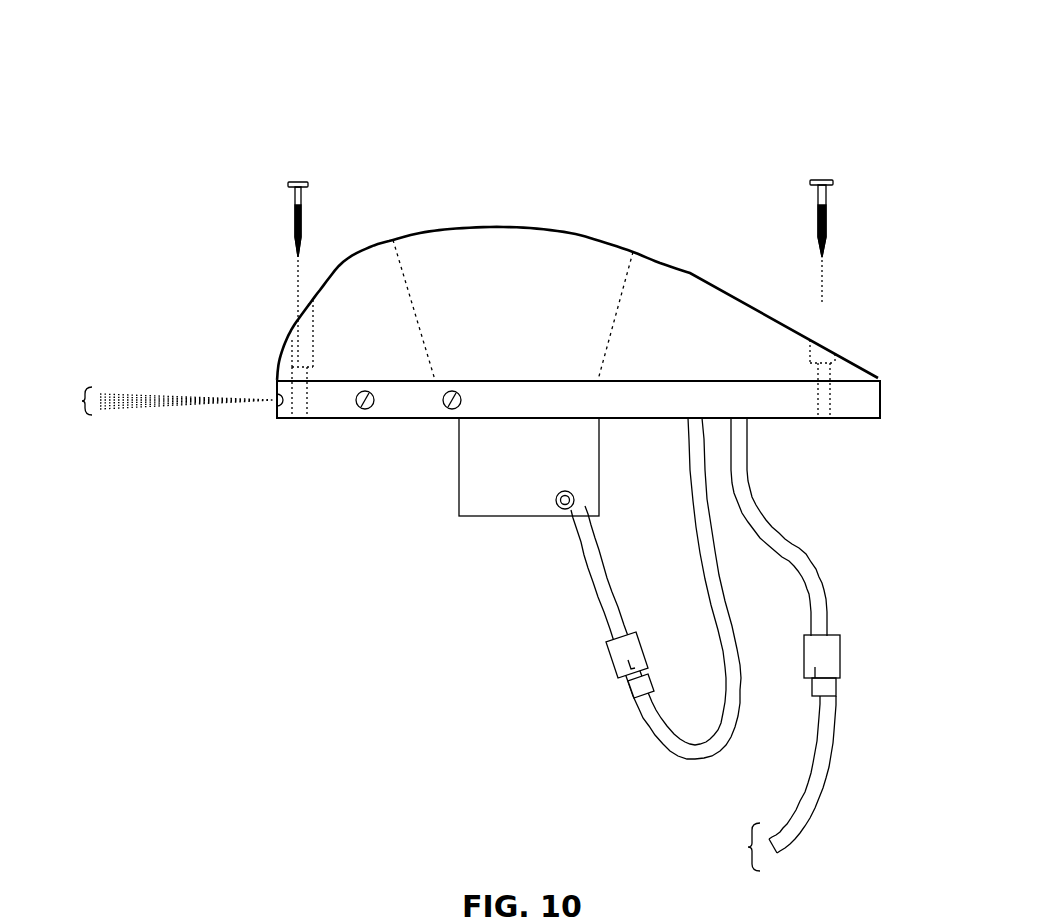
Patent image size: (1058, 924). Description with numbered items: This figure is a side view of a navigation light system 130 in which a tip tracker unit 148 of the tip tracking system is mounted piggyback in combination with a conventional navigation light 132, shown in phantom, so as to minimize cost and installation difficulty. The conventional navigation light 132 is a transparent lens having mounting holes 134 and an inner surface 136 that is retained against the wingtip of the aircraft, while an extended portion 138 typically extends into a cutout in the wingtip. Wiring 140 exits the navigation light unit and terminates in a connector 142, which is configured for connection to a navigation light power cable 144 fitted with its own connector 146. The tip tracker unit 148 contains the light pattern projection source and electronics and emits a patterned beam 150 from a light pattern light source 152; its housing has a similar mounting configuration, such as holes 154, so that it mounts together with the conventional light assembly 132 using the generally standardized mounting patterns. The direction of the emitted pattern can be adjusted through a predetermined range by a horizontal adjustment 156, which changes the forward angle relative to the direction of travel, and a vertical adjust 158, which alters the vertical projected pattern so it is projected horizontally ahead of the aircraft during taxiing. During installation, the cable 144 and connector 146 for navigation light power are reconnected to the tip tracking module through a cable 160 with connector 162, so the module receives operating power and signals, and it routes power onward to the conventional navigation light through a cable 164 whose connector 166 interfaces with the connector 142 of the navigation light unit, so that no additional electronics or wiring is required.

The navigation light system 130 is at (775, 98).
The conventional navigation light 132 is at (680, 268).
The mounting holes 134 is at (293, 333).
The inner surface 136 is at (500, 380).
The extended portion 138 is at (485, 518).
The wiring 140 is at (588, 565).
The connector 142 is at (610, 655).
The navigation light power cable 144 is at (838, 800).
The connector 146 is at (836, 690).
The tip tracker unit 148 is at (882, 400).
The patterned beam 150 is at (154, 400).
The light pattern light source 152 is at (273, 393).
The holes 154 is at (298, 420).
The horizontal adjustment 156 is at (448, 410).
The vertical adjust 158 is at (362, 410).
The cable 160 is at (825, 585).
The connector 162 is at (840, 650).
The cable 164 is at (660, 748).
The connector 166 is at (628, 688).